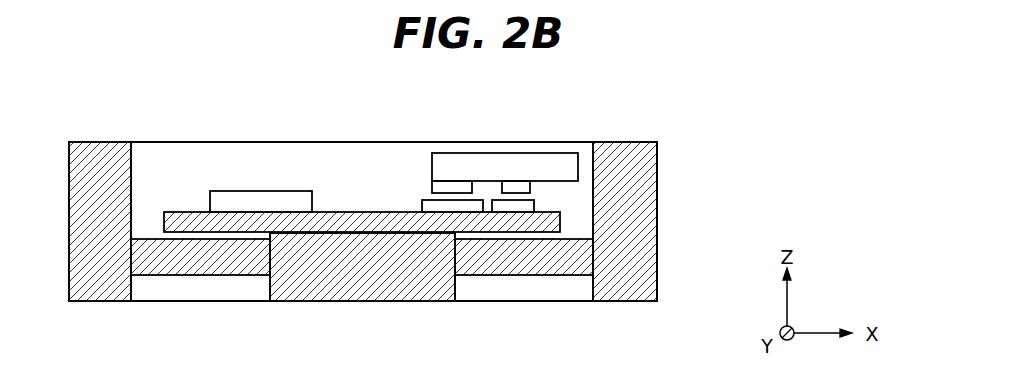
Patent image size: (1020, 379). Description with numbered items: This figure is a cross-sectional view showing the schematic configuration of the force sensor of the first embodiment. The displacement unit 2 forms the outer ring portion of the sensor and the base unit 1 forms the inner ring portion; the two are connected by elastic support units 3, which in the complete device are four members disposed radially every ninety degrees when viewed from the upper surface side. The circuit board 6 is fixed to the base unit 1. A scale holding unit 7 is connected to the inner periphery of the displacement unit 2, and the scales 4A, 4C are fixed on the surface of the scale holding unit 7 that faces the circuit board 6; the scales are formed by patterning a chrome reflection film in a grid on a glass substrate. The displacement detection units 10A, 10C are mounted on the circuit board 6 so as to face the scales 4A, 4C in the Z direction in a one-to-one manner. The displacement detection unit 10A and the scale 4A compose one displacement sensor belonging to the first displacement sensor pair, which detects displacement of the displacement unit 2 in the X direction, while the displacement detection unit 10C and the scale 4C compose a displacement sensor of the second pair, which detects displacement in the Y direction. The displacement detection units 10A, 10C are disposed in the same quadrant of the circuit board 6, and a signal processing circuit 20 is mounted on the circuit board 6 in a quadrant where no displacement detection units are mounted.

The base unit 1 is at (420, 290).
The displacement unit 2 is at (650, 166).
The elastic support unit 3 is at (227, 268).
The circuit board 6 is at (543, 226).
The scale holding unit 7 is at (560, 158).
The scale 4A is at (515, 187).
The scale 4C is at (452, 187).
The displacement detection unit 10A is at (531, 205).
The displacement detection unit 10C is at (426, 205).
The signal processing circuit 20 is at (242, 203).